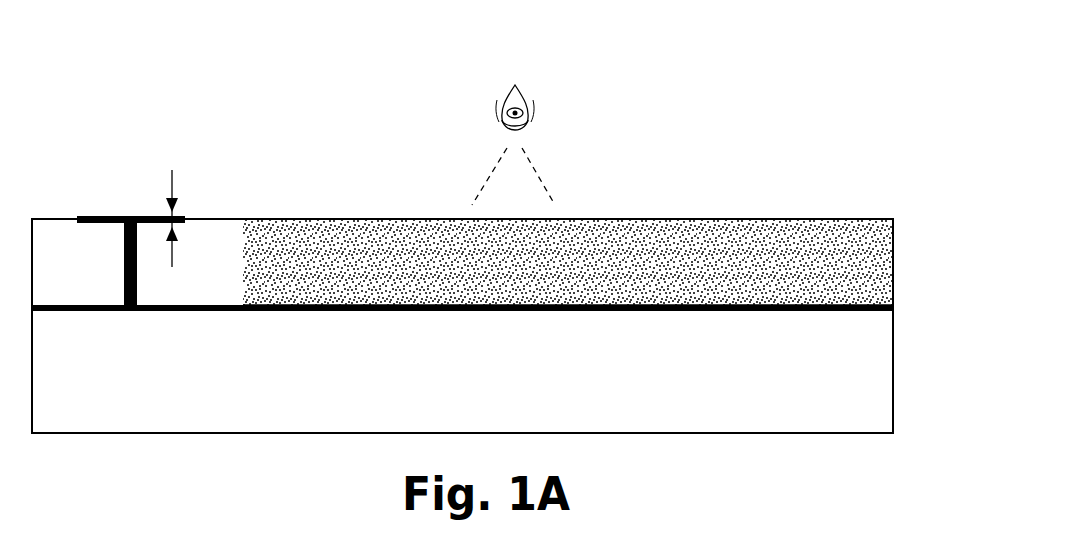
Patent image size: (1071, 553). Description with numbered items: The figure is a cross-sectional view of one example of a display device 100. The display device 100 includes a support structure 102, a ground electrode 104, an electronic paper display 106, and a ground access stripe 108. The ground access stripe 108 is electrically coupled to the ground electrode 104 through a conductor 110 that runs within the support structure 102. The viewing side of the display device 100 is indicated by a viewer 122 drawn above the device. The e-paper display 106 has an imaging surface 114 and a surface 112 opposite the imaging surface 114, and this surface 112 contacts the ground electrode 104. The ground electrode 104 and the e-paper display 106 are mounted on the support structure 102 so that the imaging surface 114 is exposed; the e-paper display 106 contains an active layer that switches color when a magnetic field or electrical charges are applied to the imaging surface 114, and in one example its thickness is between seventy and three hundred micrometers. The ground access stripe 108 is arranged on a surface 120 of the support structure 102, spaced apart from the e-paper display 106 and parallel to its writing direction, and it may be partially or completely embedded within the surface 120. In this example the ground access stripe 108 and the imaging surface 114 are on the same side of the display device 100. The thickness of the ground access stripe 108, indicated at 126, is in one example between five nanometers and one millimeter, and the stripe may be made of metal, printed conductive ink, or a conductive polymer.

The display device 100 is at (658, 93).
The support structure 102 is at (882, 367).
The ground electrode 104 is at (893, 312).
The electronic paper display 106 is at (885, 248).
The ground access stripe 108 is at (102, 218).
The conductor 110 is at (122, 273).
The surface 112 is at (767, 305).
The imaging surface 114 is at (688, 218).
The surface 120 is at (45, 218).
The viewer 122 is at (525, 107).
The thickness 126 is at (172, 180).